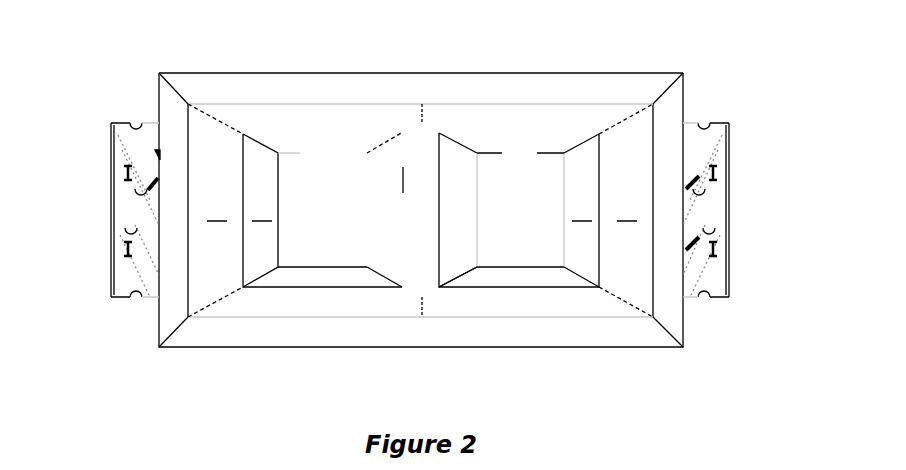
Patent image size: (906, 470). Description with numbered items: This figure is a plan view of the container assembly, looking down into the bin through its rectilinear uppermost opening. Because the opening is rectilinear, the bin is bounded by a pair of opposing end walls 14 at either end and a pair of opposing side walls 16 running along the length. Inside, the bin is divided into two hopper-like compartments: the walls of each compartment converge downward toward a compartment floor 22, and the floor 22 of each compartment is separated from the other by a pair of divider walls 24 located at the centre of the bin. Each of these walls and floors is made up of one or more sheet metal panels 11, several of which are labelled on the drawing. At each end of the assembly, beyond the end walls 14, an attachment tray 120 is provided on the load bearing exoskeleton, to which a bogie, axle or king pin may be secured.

The sheet metal panel 11 is at (262, 117).
The end wall 14 is at (215, 177).
The side wall 16 is at (360, 115).
The compartment floor 22 is at (307, 243).
The divider wall 24 is at (384, 243).
The attachment tray 120 is at (112, 236).